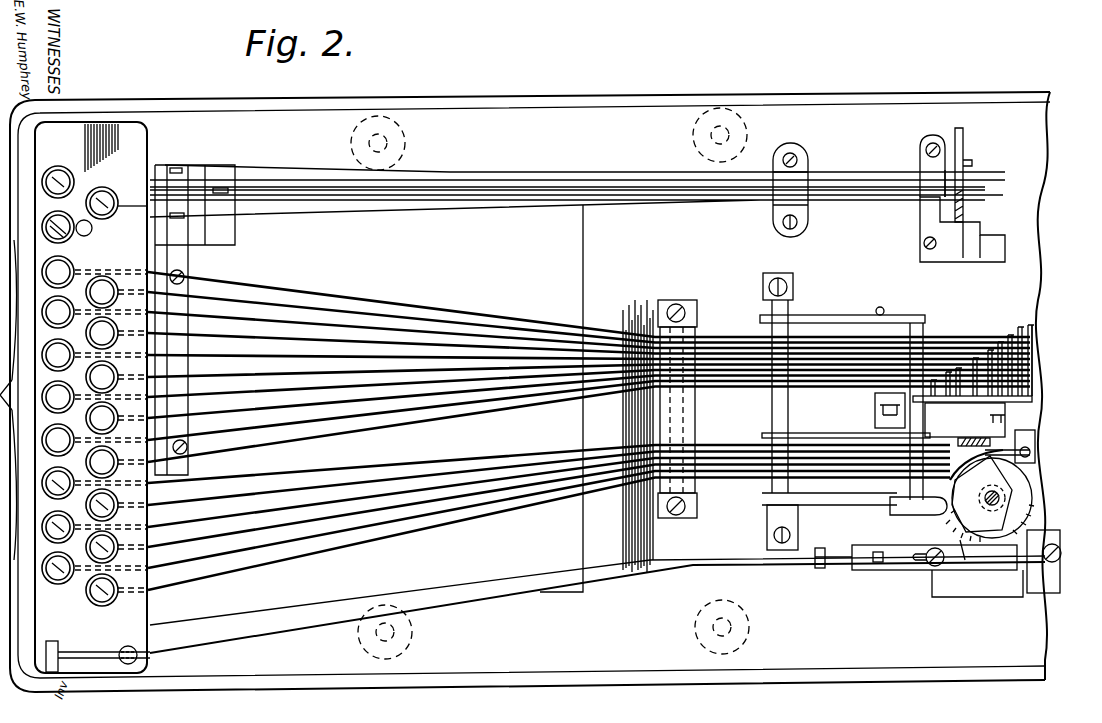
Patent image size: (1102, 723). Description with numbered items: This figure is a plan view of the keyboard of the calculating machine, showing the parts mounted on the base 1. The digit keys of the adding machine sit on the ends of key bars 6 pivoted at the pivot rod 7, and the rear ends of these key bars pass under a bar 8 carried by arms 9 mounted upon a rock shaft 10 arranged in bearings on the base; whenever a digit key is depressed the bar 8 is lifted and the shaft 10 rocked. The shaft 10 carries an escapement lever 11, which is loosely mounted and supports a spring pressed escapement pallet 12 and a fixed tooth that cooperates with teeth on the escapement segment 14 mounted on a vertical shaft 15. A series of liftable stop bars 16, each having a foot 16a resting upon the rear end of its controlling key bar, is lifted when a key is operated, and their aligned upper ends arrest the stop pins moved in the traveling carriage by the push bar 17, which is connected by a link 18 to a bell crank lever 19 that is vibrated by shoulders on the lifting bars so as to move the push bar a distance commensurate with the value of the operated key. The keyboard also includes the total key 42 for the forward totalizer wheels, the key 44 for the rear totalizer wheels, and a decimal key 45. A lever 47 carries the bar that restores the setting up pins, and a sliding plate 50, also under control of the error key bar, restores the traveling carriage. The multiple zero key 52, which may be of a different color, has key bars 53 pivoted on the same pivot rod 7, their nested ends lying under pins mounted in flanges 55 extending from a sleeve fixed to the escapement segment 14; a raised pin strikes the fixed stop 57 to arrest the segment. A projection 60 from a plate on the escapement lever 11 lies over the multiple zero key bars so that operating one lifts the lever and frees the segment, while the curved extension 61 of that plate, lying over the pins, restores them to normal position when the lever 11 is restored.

The base 1 is at (508, 667).
The key bars 6 is at (468, 335).
The pivot rod 7 is at (700, 335).
The bar 8 is at (928, 328).
The arms 9 is at (828, 318).
The rock shaft 10 is at (789, 412).
The escapement lever 11 is at (842, 507).
The escapement pallet 12 is at (955, 502).
The escapement segment 14 is at (1000, 520).
The vertical shaft 15 is at (991, 491).
The liftable stop bars 16 is at (1035, 345).
The foot 16a is at (1036, 378).
The push bar 17 is at (1035, 400).
The link 18 is at (965, 420).
The bell crank lever 19 is at (875, 405).
The total key 42 is at (58, 166).
The key 44 is at (176, 320).
The decimal key 45 is at (90, 229).
The lever 47 is at (1035, 445).
The sliding plate 50 is at (898, 562).
The multiple zero key 52 is at (103, 560).
The key bars 53 is at (290, 520).
The flanges 55 is at (985, 492).
The fixed stop 57 is at (1036, 452).
The projection 60 is at (905, 500).
The curved extension 61 is at (962, 545).